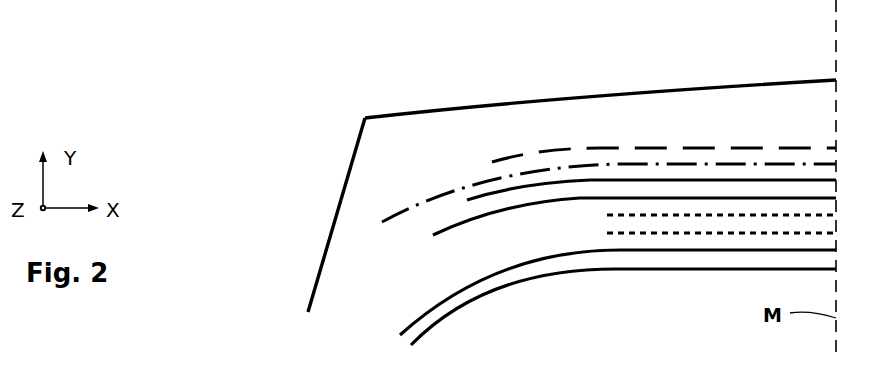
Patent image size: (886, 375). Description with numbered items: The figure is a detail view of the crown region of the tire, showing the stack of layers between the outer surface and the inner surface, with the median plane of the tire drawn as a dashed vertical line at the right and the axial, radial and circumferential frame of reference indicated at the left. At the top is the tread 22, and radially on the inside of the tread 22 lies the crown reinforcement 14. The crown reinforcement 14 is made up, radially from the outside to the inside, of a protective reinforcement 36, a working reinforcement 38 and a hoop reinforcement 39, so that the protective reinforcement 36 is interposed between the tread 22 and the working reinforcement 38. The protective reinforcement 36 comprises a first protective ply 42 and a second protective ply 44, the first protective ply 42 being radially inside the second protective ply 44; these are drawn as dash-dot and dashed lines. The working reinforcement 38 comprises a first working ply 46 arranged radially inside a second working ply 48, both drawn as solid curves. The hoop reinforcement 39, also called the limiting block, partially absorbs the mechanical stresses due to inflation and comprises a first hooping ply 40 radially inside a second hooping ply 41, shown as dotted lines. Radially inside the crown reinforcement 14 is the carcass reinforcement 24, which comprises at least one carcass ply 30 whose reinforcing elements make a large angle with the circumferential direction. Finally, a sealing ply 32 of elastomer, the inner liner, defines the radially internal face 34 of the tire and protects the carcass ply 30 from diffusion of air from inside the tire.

The crown reinforcement 14 is at (739, 106).
The tread 22 is at (538, 80).
The carcass reinforcement 24 is at (404, 301).
The carcass ply 30 is at (400, 330).
The sealing ply 32 is at (515, 300).
The radially internal face 34 is at (455, 315).
The protective reinforcement 36 is at (372, 152).
The working reinforcement 38 is at (434, 211).
The hoop reinforcement 39 is at (578, 228).
The first hooping ply 40 is at (683, 233).
The second hooping ply 41 is at (652, 215).
The first protective ply 42 is at (532, 168).
The second protective ply 44 is at (502, 160).
The first working ply 46 is at (630, 198).
The second working ply 48 is at (598, 182).